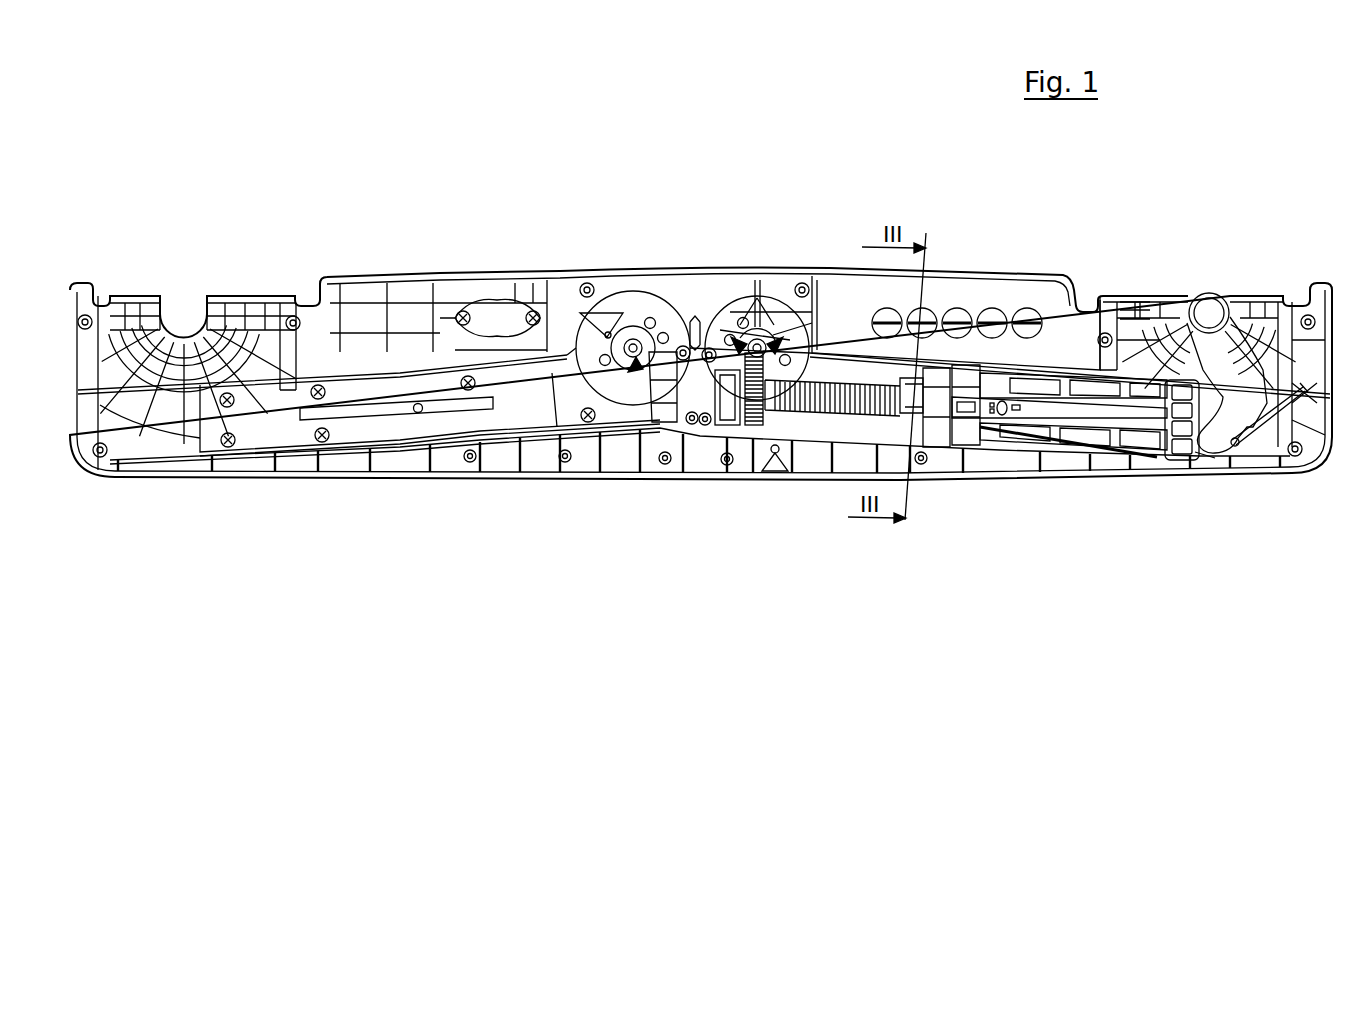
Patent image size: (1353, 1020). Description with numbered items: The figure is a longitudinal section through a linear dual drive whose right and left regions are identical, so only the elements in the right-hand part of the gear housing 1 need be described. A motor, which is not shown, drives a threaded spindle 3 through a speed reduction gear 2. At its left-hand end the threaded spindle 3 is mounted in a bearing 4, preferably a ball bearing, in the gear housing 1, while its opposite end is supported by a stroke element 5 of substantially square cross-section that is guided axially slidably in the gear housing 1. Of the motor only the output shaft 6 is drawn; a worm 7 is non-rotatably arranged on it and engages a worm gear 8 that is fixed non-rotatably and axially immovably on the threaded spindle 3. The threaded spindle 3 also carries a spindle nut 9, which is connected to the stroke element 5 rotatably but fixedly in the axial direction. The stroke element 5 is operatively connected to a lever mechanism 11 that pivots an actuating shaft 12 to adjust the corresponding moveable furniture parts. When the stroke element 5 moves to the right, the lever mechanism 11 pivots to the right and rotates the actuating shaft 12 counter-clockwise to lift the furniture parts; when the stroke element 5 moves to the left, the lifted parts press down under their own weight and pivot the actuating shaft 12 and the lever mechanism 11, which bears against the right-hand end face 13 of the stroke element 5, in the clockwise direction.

The gear housing 1 is at (748, 264).
The speed reduction gear 2 is at (743, 337).
The threaded spindle 3 is at (830, 397).
The bearing 4 is at (730, 405).
The stroke element 5 is at (1151, 442).
The output shaft 6 is at (759, 343).
The worm 7 is at (813, 330).
The worm gear 8 is at (743, 397).
The spindle nut 9 is at (934, 430).
The lever mechanism 11 is at (1245, 428).
The actuating shaft 12 is at (1210, 305).
The right-hand end face 13 is at (1204, 458).